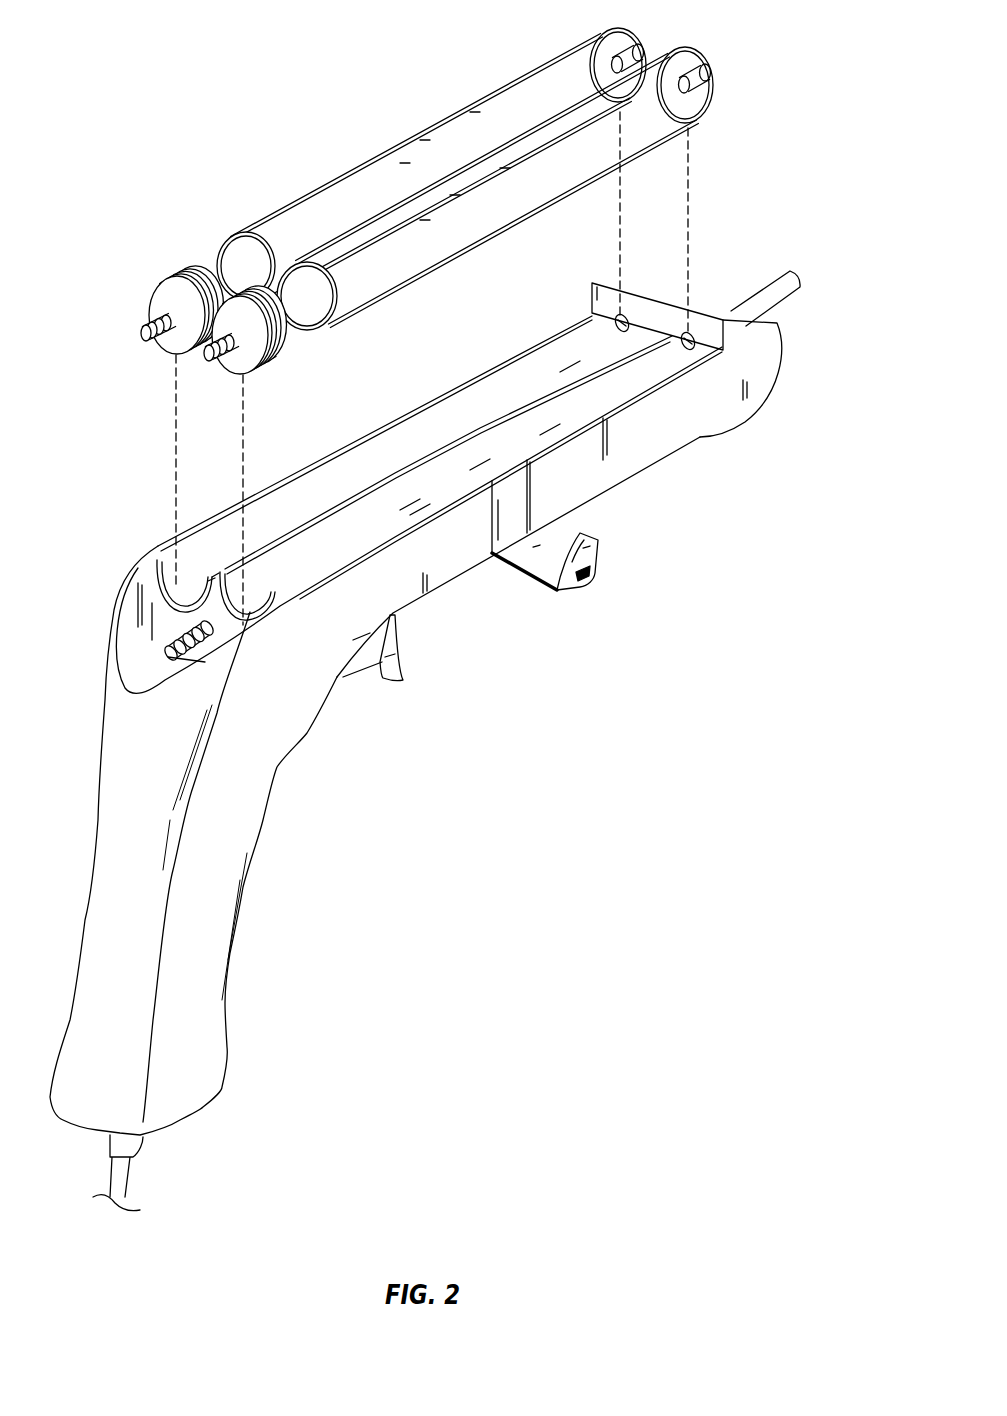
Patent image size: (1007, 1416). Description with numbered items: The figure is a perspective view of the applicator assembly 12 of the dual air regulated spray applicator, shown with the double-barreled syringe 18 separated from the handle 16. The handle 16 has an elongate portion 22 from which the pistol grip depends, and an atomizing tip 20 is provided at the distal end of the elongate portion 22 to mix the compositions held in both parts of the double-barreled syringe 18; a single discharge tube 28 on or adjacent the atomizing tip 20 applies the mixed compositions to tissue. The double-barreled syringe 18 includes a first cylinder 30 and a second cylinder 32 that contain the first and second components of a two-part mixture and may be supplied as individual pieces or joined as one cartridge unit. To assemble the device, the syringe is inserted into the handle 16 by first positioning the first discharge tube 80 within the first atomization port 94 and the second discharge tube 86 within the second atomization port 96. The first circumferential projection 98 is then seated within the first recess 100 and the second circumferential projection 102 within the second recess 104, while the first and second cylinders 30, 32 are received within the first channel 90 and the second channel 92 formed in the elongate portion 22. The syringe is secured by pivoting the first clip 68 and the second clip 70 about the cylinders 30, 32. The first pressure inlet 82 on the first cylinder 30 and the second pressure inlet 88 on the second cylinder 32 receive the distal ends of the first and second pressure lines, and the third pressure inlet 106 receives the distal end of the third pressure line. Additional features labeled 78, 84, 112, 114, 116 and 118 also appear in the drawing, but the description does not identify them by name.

The applicator assembly 12 is at (153, 152).
The handle 16 is at (403, 753).
The double-barreled syringe 18 is at (367, 120).
The atomizing tip 20 is at (783, 330).
The elongate portion 22 is at (425, 590).
The single discharge tube 28 is at (793, 273).
The first cylinder 30 is at (367, 175).
The second cylinder 32 is at (507, 205).
The first clip 68 is at (390, 423).
The second clip 70 is at (582, 583).
The first barrel open end 78 is at (243, 240).
The first discharge tube 80 is at (643, 50).
The first pressure inlet 82 is at (150, 305).
The second barrel open end 84 is at (338, 303).
The second discharge tube 86 is at (713, 65).
The second pressure inlet 88 is at (236, 352).
The first channel 90 is at (540, 363).
The second channel 92 is at (597, 397).
The first atomization port 94 is at (593, 313).
The second atomization port 96 is at (668, 368).
The first circumferential projection 98 is at (178, 270).
The first recess 100 is at (167, 557).
The second circumferential projection 102 is at (278, 345).
The second recess 104 is at (250, 603).
The third pressure inlet 106 is at (165, 655).
The top edge 112 is at (363, 438).
The bottom surface 114 is at (540, 590).
The clip 116 is at (602, 552).
The slot 118 is at (520, 502).